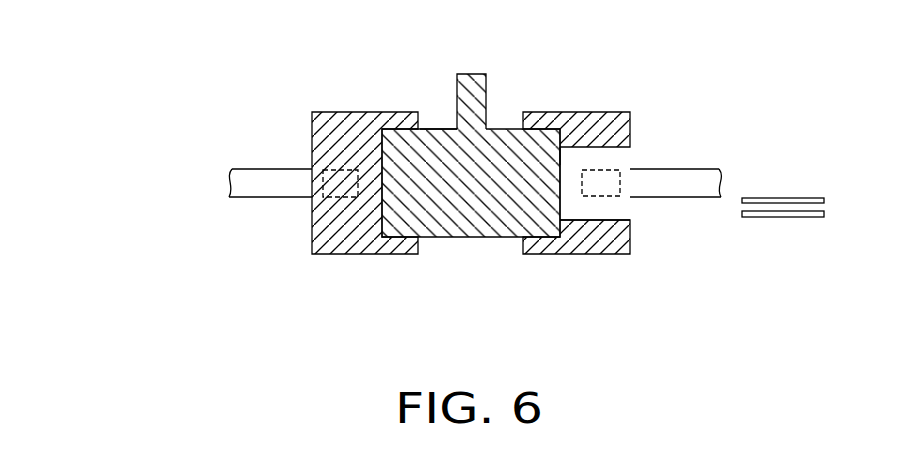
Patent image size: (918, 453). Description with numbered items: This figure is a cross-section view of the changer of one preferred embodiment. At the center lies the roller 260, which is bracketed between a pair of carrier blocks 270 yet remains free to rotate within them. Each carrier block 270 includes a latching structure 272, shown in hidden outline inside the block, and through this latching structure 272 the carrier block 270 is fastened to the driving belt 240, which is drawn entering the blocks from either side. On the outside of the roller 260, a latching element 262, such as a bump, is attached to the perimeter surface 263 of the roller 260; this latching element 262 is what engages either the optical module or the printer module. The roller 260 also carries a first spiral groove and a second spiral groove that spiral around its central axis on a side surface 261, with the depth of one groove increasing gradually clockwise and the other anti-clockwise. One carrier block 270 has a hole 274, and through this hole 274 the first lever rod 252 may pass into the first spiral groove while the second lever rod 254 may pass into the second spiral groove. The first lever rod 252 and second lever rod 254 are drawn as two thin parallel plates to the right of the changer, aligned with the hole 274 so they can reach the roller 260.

The driving belt 240 is at (262, 188).
The first lever rod 252 is at (815, 198).
The second lever rod 254 is at (815, 218).
The roller 260 is at (480, 229).
The side surface 261 is at (561, 155).
The latching element 262 is at (482, 86).
The perimeter surface 263 is at (440, 128).
The carrier block 270 is at (378, 255).
The latching structure 272 is at (333, 198).
The hole 274 is at (603, 219).